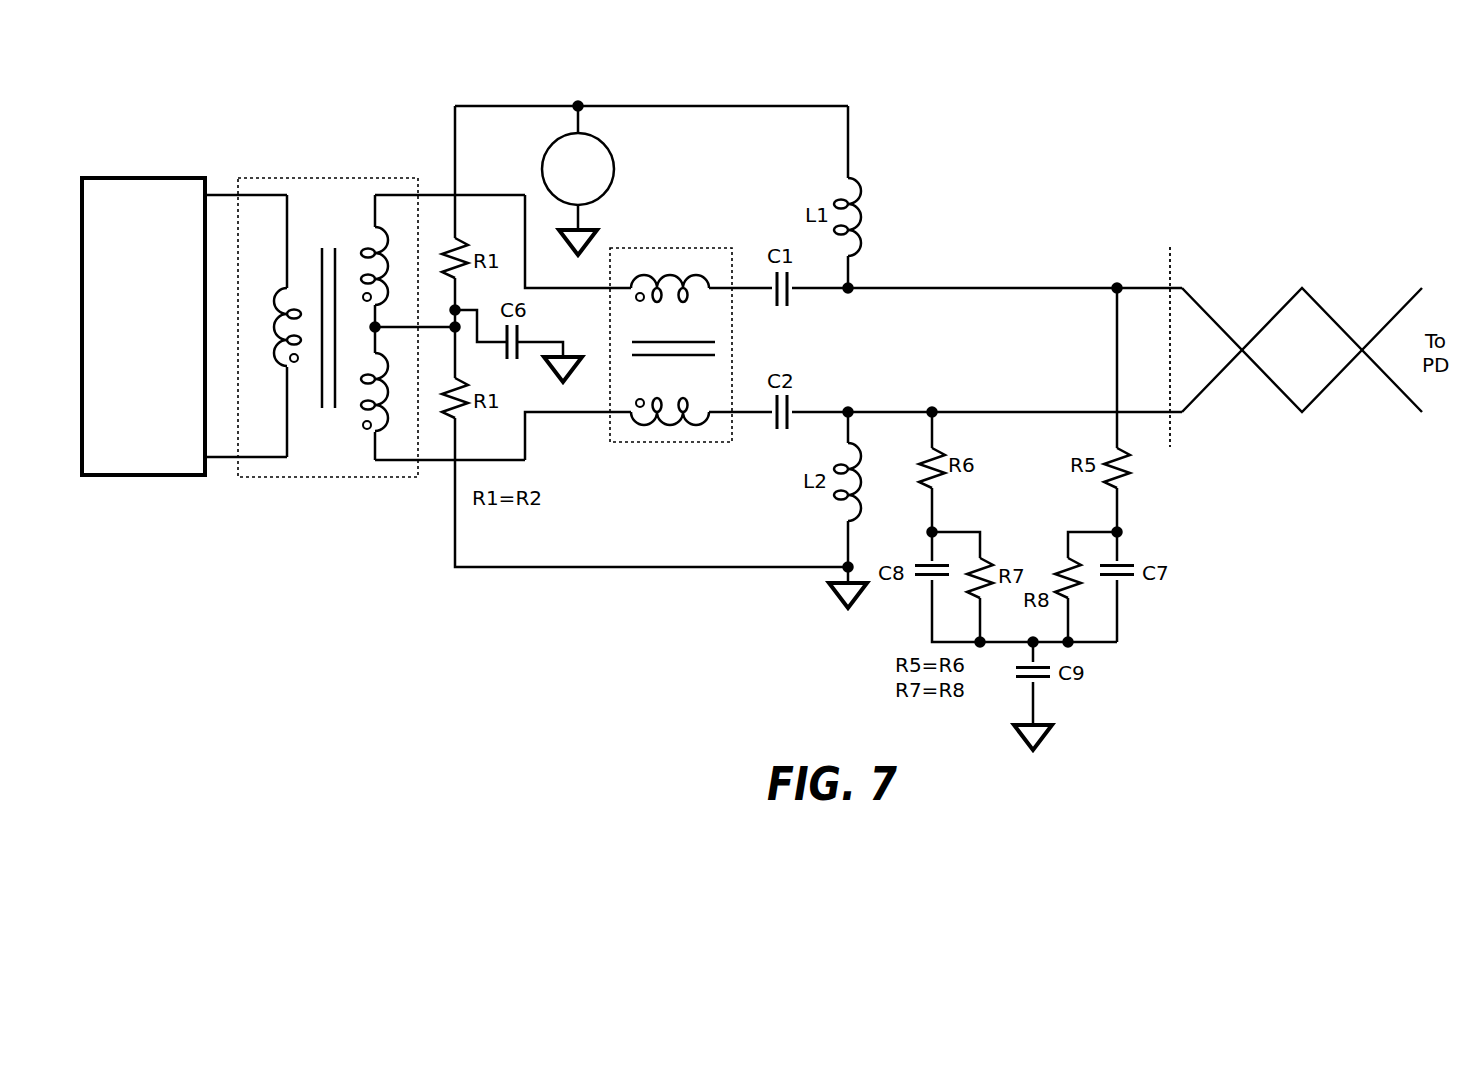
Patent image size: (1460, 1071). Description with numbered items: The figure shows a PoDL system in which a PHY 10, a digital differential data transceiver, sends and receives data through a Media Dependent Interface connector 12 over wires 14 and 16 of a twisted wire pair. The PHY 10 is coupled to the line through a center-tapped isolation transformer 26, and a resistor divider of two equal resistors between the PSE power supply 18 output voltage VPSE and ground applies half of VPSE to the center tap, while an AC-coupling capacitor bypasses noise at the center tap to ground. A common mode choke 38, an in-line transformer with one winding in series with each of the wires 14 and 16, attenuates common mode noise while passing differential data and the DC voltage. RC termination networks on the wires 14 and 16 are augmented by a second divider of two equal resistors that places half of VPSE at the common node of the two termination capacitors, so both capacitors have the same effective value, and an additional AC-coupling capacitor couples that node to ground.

The PHY 10 is at (143, 178).
The isolation transformer 26 is at (325, 178).
The PSE power supply 18 is at (617, 170).
The common mode choke 38 is at (673, 248).
The Media Dependent Interface connector 12 is at (1172, 270).
The wire 14 is at (1208, 315).
The wire 16 is at (1208, 385).